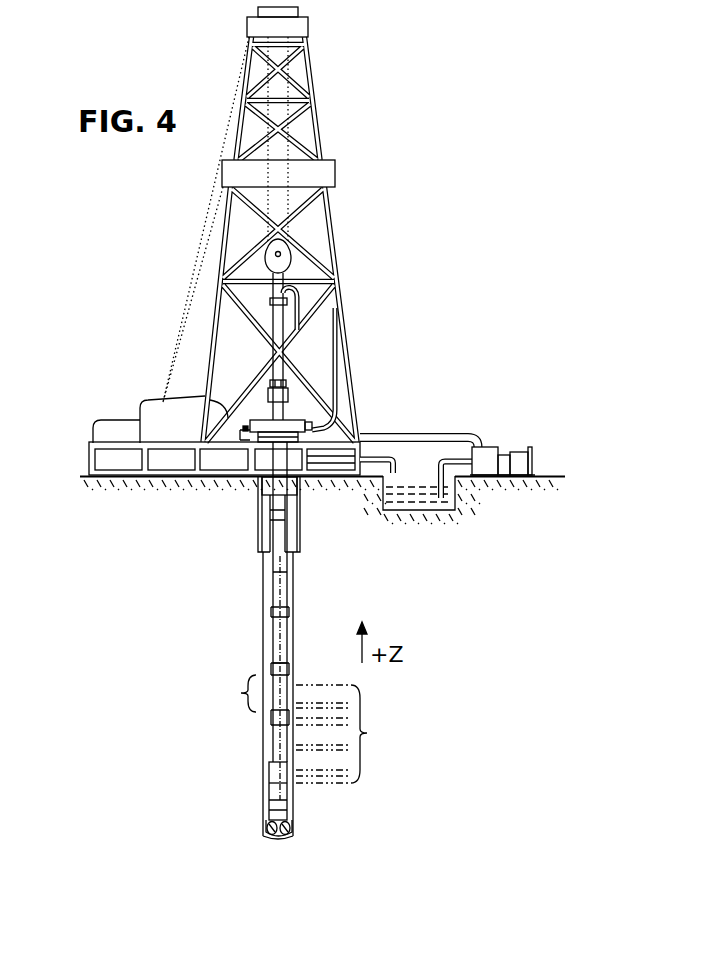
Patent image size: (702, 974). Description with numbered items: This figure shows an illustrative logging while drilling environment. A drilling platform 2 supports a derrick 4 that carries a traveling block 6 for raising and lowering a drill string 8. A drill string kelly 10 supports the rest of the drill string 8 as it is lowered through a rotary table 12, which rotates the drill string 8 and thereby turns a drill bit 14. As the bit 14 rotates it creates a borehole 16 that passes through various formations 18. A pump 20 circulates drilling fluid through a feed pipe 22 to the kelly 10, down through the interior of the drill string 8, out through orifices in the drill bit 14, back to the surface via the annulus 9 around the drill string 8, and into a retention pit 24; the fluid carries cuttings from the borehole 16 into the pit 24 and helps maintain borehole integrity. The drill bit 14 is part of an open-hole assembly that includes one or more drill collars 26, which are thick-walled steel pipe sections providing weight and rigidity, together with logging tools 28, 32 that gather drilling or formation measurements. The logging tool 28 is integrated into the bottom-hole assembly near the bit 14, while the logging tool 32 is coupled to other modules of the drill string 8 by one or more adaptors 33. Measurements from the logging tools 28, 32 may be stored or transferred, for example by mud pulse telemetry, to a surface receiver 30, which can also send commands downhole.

The drilling platform 2 is at (89, 447).
The derrick 4 is at (319, 128).
The traveling block 6 is at (290, 252).
The drill string 8 is at (284, 603).
The annulus 9 is at (268, 605).
The drill string kelly 10 is at (278, 318).
The rotary table 12 is at (296, 417).
The drill bit 14 is at (291, 821).
The borehole 16 is at (294, 607).
The formations 18 is at (350, 734).
The pump 20 is at (485, 450).
The feed pipe 22 is at (430, 434).
The retention pit 24 is at (395, 500).
The drill collars 26 is at (277, 812).
The logging tool 28 is at (270, 778).
The surface receiver 30 is at (282, 372).
The logging tool 32 is at (230, 693).
The adaptors 33 is at (281, 670).